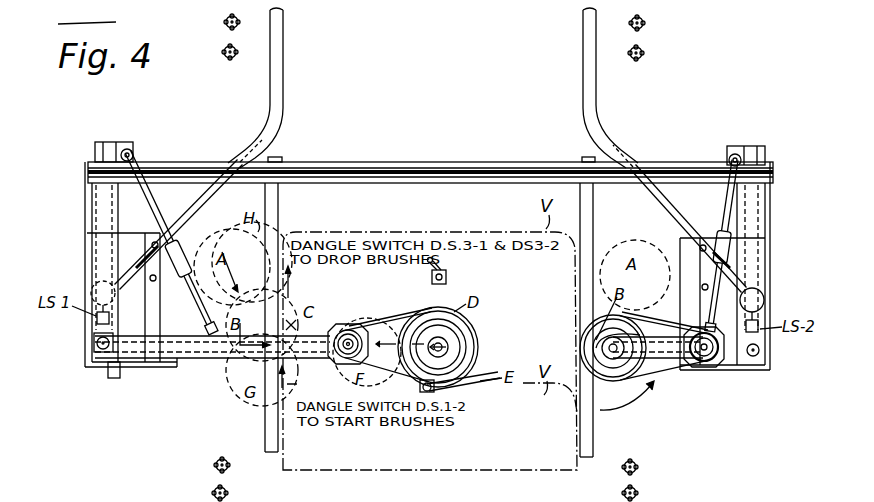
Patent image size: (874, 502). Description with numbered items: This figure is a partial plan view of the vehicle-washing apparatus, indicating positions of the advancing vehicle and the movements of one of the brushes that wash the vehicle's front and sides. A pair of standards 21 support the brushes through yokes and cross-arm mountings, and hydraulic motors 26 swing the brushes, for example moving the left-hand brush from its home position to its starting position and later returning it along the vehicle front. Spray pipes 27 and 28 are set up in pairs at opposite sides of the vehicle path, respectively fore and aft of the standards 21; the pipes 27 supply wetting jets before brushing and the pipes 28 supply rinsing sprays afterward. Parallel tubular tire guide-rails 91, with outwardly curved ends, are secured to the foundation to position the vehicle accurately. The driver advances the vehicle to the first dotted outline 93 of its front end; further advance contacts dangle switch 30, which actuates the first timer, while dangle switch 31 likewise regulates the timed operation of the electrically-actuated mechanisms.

The standards 21 is at (78, 342).
The hydraulic motor 26 is at (149, 197).
The spray pipes 27 is at (207, 486).
The spray pipes 28 is at (216, 46).
The dangle switch 30 is at (478, 372).
The dangle switch 31 is at (447, 277).
The tire guide-rails 91 is at (284, 62).
The first dotted outline 93 is at (432, 400).